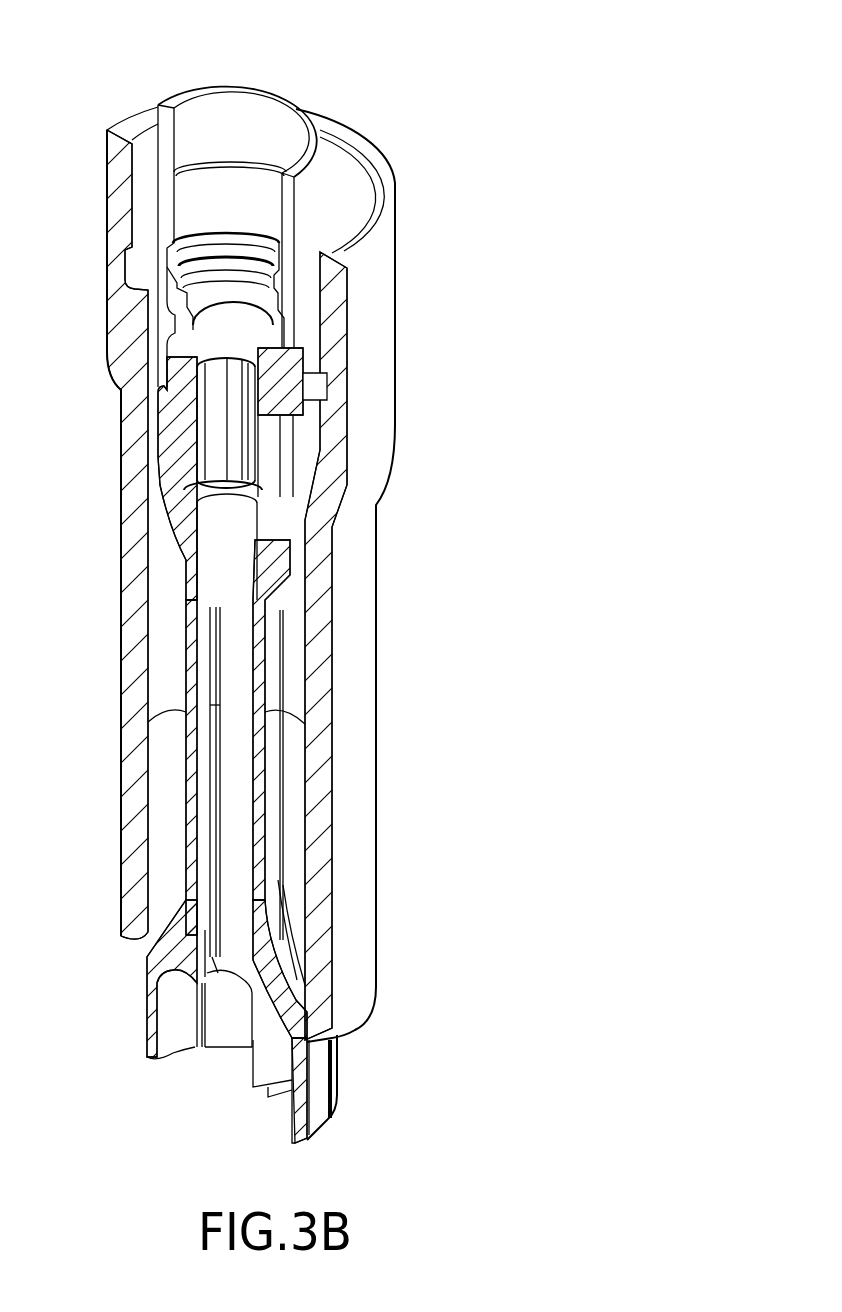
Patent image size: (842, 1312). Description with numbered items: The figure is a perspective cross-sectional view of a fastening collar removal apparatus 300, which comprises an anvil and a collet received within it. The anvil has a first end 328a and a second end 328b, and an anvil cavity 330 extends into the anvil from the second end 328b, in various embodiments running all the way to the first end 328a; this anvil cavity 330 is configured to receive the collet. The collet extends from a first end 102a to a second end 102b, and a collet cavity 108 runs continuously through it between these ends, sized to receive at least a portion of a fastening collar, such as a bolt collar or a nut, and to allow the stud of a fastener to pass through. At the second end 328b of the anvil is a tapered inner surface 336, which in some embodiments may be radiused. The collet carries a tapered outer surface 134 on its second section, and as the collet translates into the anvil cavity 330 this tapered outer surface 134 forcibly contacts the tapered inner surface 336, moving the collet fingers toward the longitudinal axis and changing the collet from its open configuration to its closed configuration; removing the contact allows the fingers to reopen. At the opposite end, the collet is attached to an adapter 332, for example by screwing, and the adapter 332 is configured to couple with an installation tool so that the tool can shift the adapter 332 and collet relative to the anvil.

The fastening collar removal apparatus 300 is at (349, 87).
The adapter 332 is at (303, 207).
The first end of anvil 328a is at (357, 243).
The first end of collet 102a is at (293, 476).
The anvil cavity 330 is at (293, 620).
The collet cavity 108 is at (233, 652).
The tapered outer surface 134 is at (292, 988).
The tapered inner surface 336 is at (305, 1012).
The second end of anvil 328b is at (343, 1037).
The second end of collet 102b is at (308, 1140).